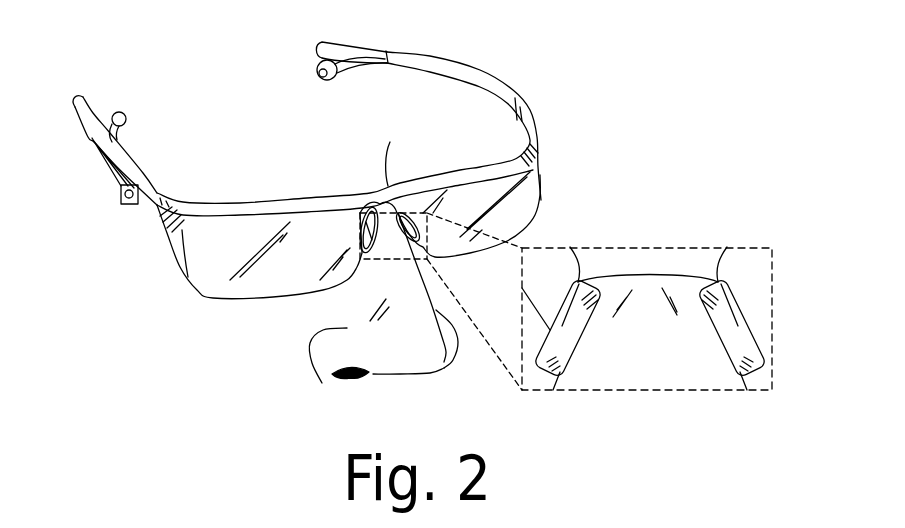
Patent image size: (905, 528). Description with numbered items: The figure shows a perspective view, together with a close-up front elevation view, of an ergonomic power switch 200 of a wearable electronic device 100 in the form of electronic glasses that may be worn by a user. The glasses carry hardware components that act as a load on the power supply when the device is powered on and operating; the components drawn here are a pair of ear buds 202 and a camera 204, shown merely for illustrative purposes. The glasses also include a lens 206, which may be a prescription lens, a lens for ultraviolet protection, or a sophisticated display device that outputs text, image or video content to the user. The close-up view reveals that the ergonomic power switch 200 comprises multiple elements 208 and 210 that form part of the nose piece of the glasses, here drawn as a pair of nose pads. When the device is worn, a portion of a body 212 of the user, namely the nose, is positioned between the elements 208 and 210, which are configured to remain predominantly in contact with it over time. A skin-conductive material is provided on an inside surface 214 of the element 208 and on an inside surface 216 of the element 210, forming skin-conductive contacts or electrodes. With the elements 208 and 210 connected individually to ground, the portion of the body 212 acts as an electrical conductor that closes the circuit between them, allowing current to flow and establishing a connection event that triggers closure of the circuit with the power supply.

The wearable electronic device 100 is at (534, 70).
The ergonomic power switch 200 is at (360, 208).
The ear buds 202 is at (317, 62).
The camera 204 is at (127, 198).
The lens 206 is at (247, 230).
The element 208 is at (522, 292).
The element 210 is at (748, 333).
The portion of a body 212 is at (317, 350).
The inside surface 214 is at (589, 338).
The inside surface 216 is at (709, 338).